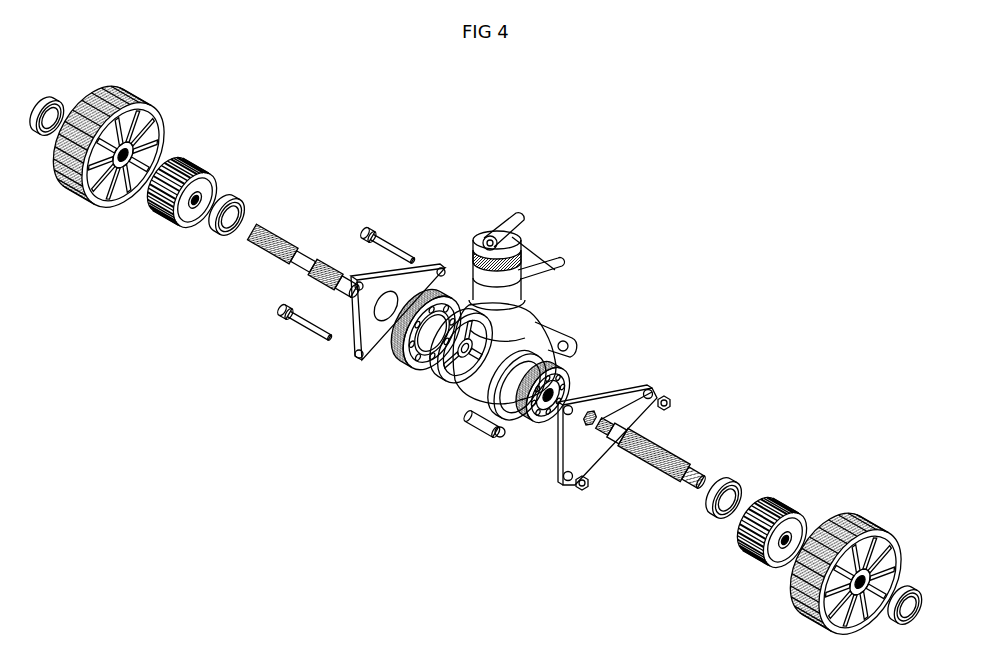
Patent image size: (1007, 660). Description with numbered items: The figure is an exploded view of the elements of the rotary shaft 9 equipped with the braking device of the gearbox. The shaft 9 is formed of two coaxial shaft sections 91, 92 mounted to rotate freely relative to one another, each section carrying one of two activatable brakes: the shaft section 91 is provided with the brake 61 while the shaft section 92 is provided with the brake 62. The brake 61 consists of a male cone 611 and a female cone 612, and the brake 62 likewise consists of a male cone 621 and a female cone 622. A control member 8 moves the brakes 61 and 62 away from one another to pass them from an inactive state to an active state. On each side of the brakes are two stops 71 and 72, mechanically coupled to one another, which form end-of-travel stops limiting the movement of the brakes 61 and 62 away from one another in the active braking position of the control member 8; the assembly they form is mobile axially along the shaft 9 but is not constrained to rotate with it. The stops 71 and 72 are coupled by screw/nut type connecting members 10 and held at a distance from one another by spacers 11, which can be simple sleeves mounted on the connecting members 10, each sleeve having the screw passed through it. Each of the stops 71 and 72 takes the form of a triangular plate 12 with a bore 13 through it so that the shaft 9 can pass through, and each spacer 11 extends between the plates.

The control member 8 is at (532, 323).
The rotary shaft 9 is at (675, 514).
The connecting members 10 is at (383, 233).
The spacers 11 is at (557, 333).
The plate 12 is at (635, 392).
The bore 13 is at (600, 413).
The brake 61 is at (402, 493).
The male cone 611 is at (408, 343).
The female cone 612 is at (438, 345).
The brake 62 is at (522, 549).
The male cone 621 is at (546, 405).
The female cone 622 is at (520, 415).
The stop 71 is at (370, 372).
The stop 72 is at (580, 490).
The shaft section 91 is at (272, 228).
The shaft section 92 is at (673, 458).